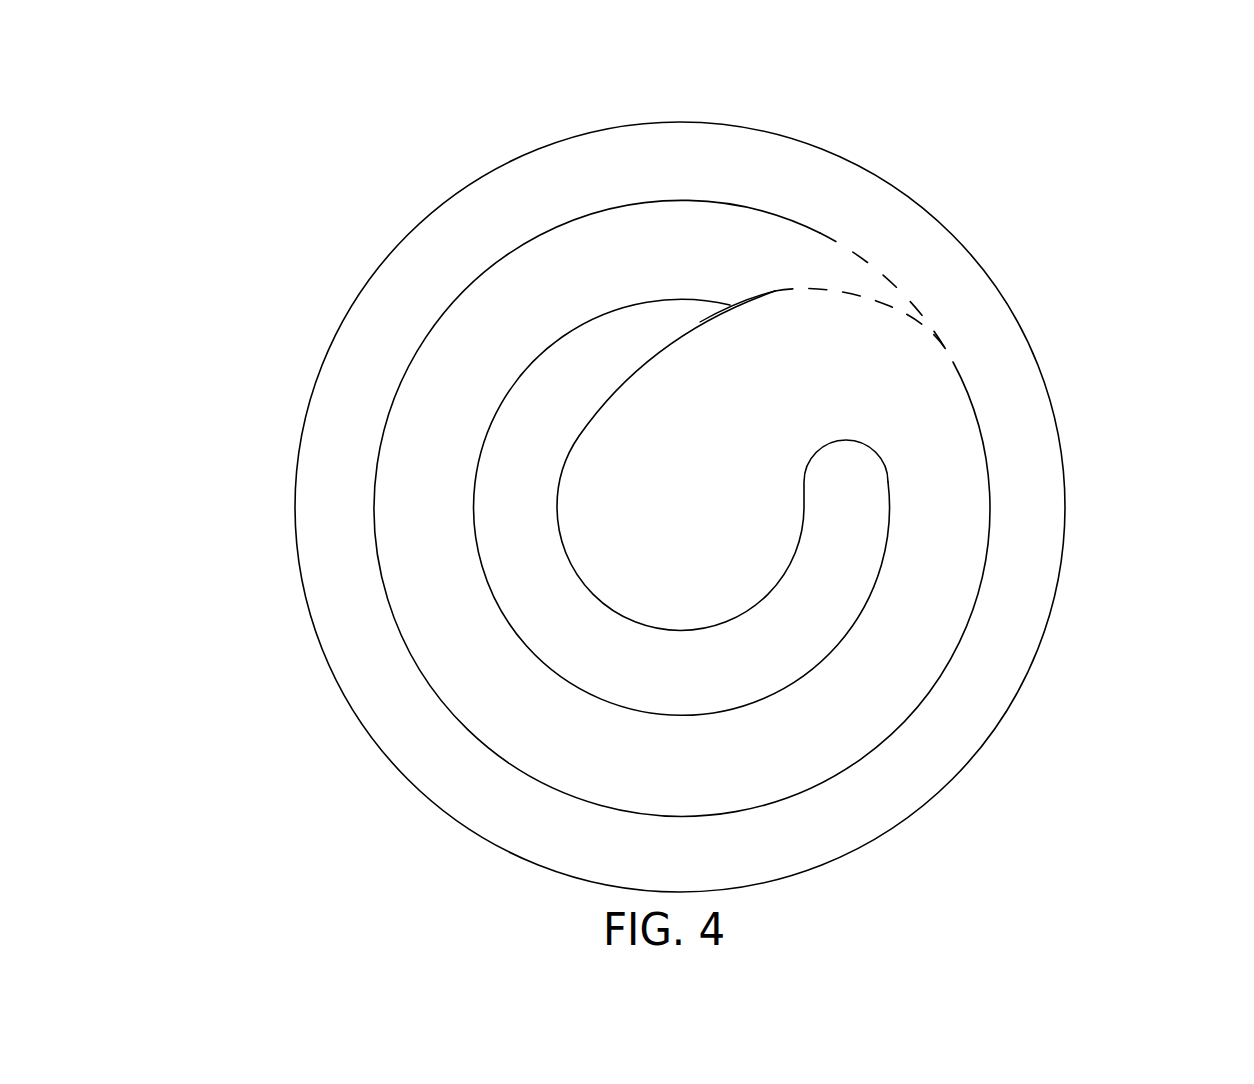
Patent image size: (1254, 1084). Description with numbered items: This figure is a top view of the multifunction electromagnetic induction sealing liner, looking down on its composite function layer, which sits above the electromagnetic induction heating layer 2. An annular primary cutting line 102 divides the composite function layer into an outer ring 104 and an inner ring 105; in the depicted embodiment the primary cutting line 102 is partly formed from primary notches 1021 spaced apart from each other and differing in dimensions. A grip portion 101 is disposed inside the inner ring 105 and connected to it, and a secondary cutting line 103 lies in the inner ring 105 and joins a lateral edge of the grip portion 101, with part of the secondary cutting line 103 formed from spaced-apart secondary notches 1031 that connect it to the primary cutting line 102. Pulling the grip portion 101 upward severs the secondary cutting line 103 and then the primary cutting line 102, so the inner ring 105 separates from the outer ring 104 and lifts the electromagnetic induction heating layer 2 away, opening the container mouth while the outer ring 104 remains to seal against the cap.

The electromagnetic induction heating layer 2 is at (529, 571).
The grip portion 101 is at (651, 513).
The primary cutting line 102 is at (995, 510).
The primary notches 1021 is at (785, 208).
The secondary cutting line 103 is at (748, 293).
The secondary notches 1031 is at (862, 292).
The outer ring 104 is at (403, 285).
The inner ring 105 is at (545, 275).